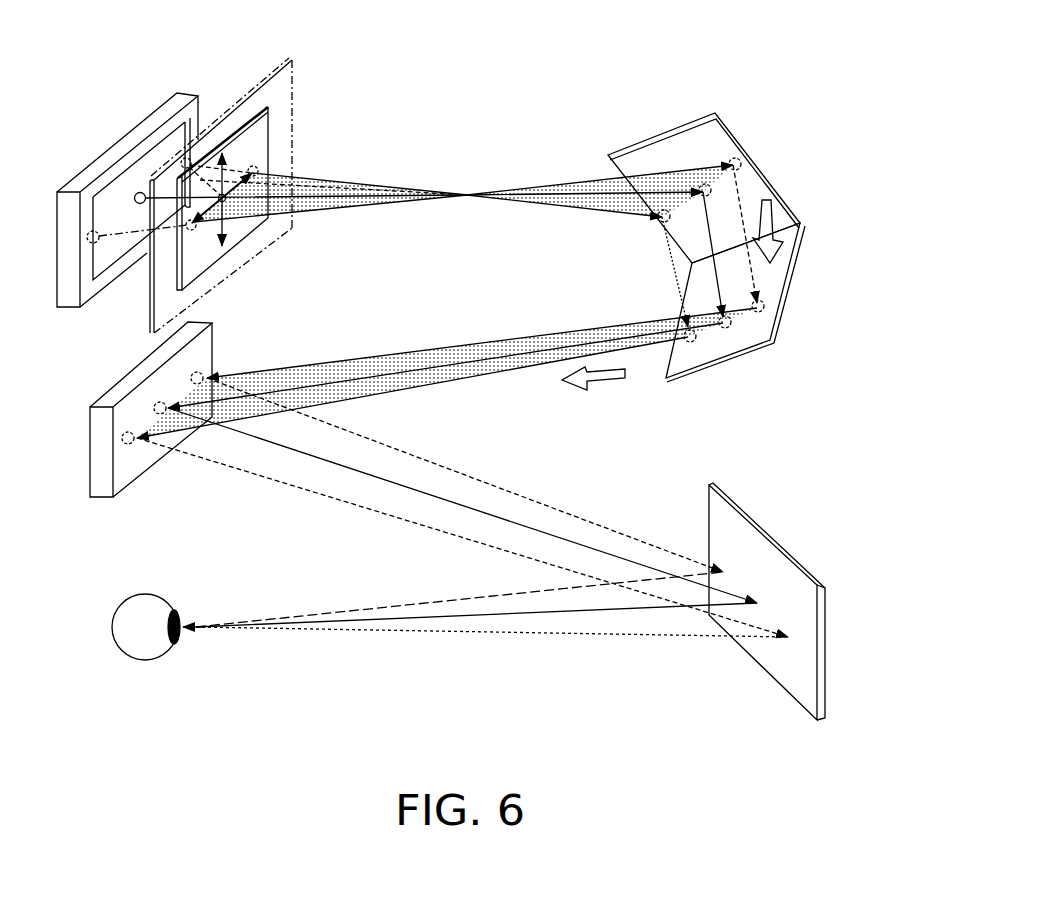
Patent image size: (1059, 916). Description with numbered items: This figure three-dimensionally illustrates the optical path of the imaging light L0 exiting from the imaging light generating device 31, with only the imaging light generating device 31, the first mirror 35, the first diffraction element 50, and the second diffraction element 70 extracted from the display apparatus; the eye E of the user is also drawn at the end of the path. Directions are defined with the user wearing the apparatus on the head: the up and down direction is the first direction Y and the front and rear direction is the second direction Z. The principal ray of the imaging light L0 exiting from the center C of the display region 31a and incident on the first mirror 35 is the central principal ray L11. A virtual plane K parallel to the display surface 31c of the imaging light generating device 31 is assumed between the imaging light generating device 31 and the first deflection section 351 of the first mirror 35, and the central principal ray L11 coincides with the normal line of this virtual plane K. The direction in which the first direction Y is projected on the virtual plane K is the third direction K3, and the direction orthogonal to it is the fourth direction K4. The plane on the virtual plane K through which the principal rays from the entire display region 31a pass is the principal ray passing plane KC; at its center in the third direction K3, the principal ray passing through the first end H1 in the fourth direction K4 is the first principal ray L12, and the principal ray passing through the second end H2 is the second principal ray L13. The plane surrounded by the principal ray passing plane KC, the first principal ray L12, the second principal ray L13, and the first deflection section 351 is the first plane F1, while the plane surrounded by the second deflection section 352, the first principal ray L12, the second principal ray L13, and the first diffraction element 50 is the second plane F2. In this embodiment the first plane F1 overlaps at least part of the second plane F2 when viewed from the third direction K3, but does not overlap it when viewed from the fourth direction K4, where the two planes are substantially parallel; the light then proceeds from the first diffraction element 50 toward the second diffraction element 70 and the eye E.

The imaging light generating device 31 is at (138, 135).
The display region 31a is at (107, 190).
The display surface 31c is at (165, 132).
The center C is at (140, 192).
The first end H1 is at (187, 157).
The second end H2 is at (87, 239).
The virtual plane K is at (264, 84).
The principal ray passing plane KC is at (266, 125).
The third direction K3 is at (224, 150).
The fourth direction K4 is at (212, 230).
The imaging light L0 is at (538, 185).
The central principal ray L11 is at (311, 176).
The first principal ray L12 is at (388, 182).
The second principal ray L13 is at (358, 208).
The first plane F1 is at (503, 186).
The second plane F2 is at (491, 380).
The first mirror 35 is at (766, 222).
The first deflection section 351 is at (742, 148).
The second deflection section 352 is at (788, 285).
The first direction Y is at (771, 210).
The second direction Z is at (612, 389).
The first diffraction element 50 is at (122, 390).
The second diffraction element 70 is at (760, 523).
The eye of observer E is at (155, 595).